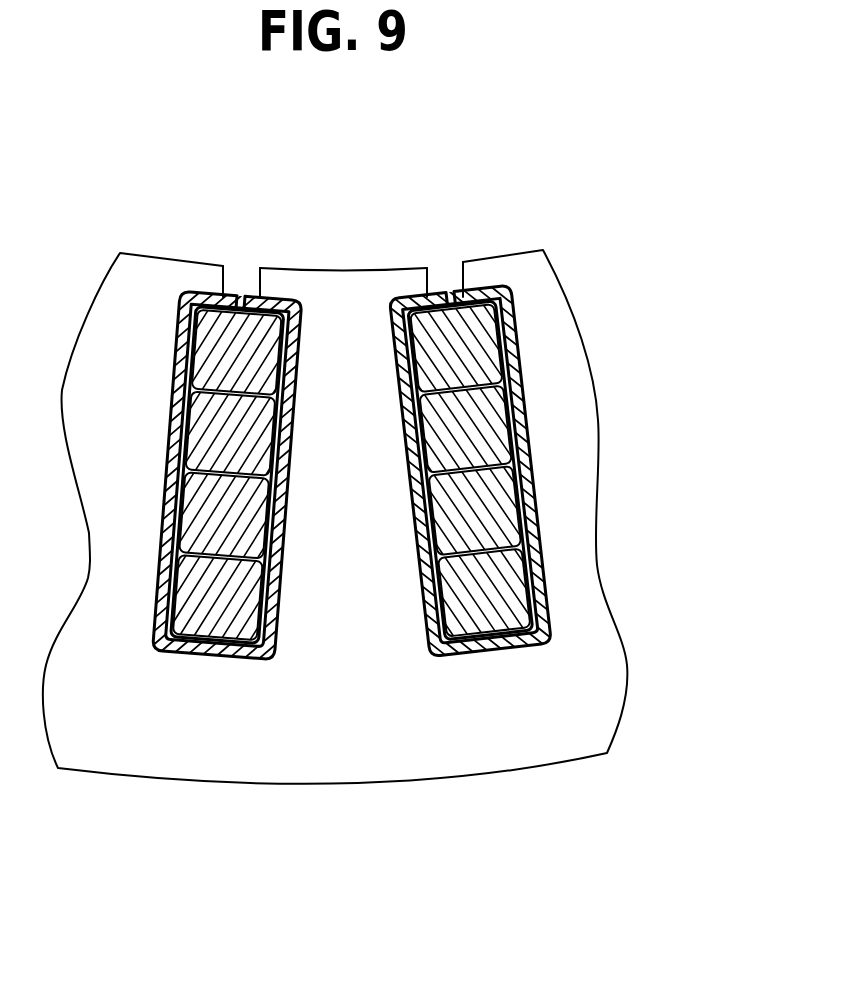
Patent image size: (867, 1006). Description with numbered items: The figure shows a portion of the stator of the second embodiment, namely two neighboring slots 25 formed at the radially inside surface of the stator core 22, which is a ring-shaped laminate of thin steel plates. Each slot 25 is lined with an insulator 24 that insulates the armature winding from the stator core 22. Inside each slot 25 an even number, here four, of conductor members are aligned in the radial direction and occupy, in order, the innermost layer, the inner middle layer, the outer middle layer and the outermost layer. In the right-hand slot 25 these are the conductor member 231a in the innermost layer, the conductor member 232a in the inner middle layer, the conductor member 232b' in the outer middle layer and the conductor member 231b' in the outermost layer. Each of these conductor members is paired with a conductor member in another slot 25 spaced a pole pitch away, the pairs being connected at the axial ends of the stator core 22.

The stator core 22 is at (357, 757).
The insulator 24 is at (220, 655).
The slot 25 is at (240, 277).
The conductor member 231a is at (467, 340).
The conductor member 232a is at (477, 427).
The conductor member 232b' is at (478, 463).
The conductor member 231b' is at (478, 463).